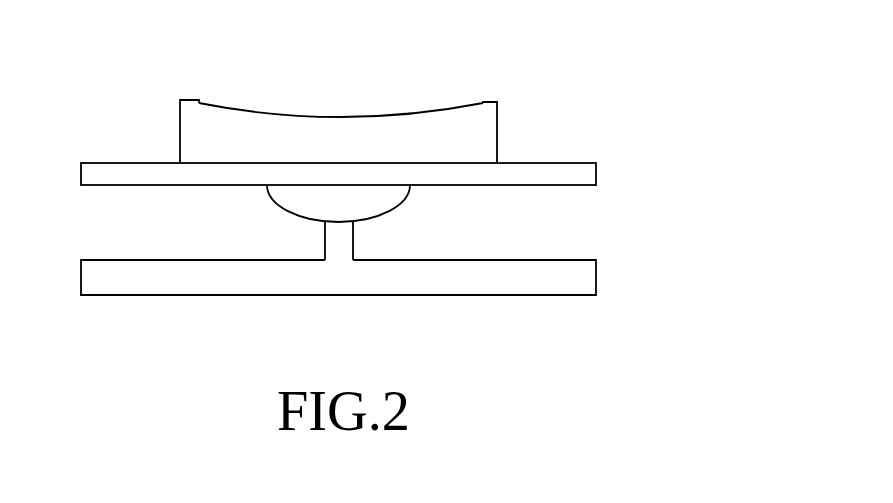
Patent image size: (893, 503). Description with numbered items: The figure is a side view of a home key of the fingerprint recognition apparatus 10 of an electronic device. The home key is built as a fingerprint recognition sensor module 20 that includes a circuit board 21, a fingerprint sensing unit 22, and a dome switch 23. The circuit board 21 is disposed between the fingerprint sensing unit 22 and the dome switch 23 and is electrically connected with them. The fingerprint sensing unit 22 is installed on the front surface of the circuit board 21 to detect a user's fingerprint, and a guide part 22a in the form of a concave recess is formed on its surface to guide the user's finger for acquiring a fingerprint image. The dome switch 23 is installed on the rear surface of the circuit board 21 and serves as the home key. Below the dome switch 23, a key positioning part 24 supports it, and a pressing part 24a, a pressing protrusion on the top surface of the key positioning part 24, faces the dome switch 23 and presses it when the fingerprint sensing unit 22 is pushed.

The fingerprint recognition apparatus 10 is at (90, 80).
The fingerprint recognition sensor module 20 is at (710, 58).
The circuit board 21 is at (590, 178).
The fingerprint sensing unit 22 is at (497, 128).
The guide part 22a is at (423, 115).
The dome switch 23 is at (390, 197).
The key positioning part 24 is at (582, 282).
The pressing part 24a is at (345, 245).